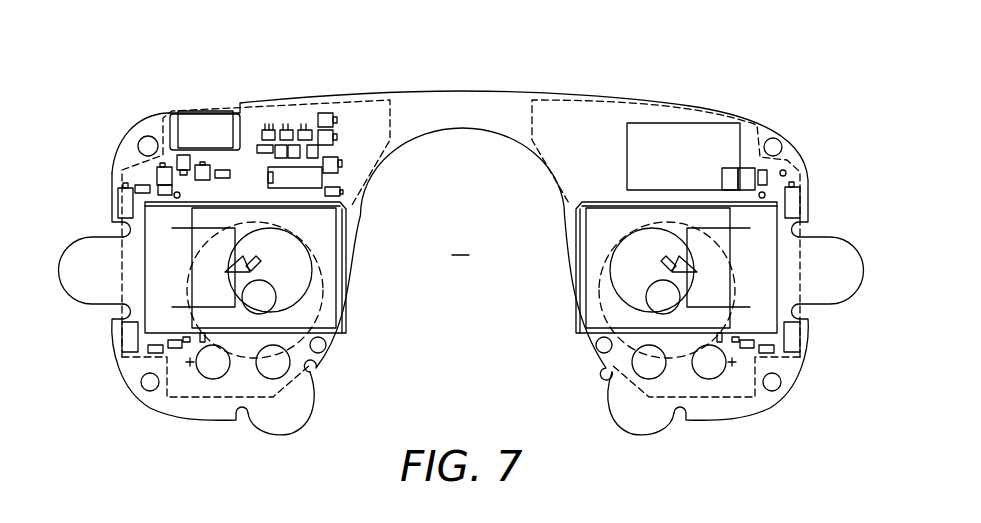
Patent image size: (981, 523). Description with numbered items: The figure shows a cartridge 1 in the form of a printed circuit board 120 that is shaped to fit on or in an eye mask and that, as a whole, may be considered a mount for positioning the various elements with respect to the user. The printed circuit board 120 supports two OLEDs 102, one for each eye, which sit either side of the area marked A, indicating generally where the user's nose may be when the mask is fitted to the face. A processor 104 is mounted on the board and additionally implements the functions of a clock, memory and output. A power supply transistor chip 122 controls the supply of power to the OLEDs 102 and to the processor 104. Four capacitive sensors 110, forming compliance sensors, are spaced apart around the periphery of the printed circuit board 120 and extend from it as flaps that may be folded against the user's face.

The head mounted display device 1 is at (197, 48).
The printed circuit board 120 is at (460, 112).
The capacitive sensor 110 is at (100, 248).
The power supply transistor chip 122 is at (340, 192).
The processor 104 is at (748, 150).
The OLED 102 is at (233, 258).